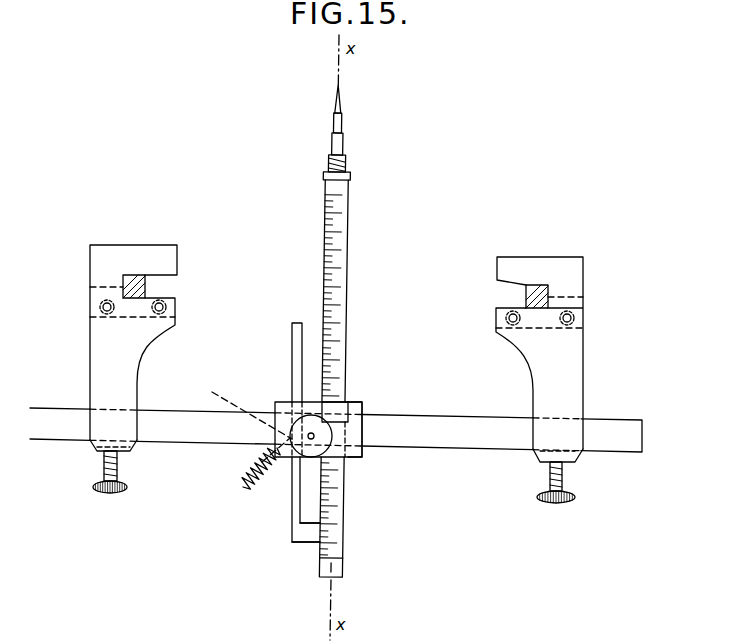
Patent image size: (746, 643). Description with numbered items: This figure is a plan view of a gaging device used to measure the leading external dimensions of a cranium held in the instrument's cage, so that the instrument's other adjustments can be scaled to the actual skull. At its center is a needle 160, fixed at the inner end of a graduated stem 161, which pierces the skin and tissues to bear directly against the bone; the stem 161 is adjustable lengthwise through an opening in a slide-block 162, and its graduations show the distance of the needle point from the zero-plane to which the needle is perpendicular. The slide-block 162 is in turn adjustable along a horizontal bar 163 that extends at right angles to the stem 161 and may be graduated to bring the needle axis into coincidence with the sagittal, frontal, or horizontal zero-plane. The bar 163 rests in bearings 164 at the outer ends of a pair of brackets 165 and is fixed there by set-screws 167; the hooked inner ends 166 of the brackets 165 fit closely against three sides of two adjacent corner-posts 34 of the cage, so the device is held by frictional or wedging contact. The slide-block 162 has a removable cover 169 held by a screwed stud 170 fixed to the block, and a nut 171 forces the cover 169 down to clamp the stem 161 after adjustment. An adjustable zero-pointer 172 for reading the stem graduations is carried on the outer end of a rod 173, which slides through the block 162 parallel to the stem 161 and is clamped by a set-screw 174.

The corner-posts 34 is at (140, 275).
The needle 160 is at (342, 115).
The stem 161 is at (347, 352).
The slide-block 162 is at (353, 462).
The horizontal bar 163 is at (432, 417).
The bearings 164 is at (95, 449).
The brackets 165 is at (93, 355).
The hooked inner ends 166 is at (177, 310).
The set-screws 167 is at (110, 494).
The removable cover 169 is at (282, 410).
The screwed stud 170 is at (237, 418).
The nut 171 is at (312, 460).
The zero-pointer 172 is at (298, 533).
The rod 173 is at (292, 340).
The set-screw 174 is at (250, 470).